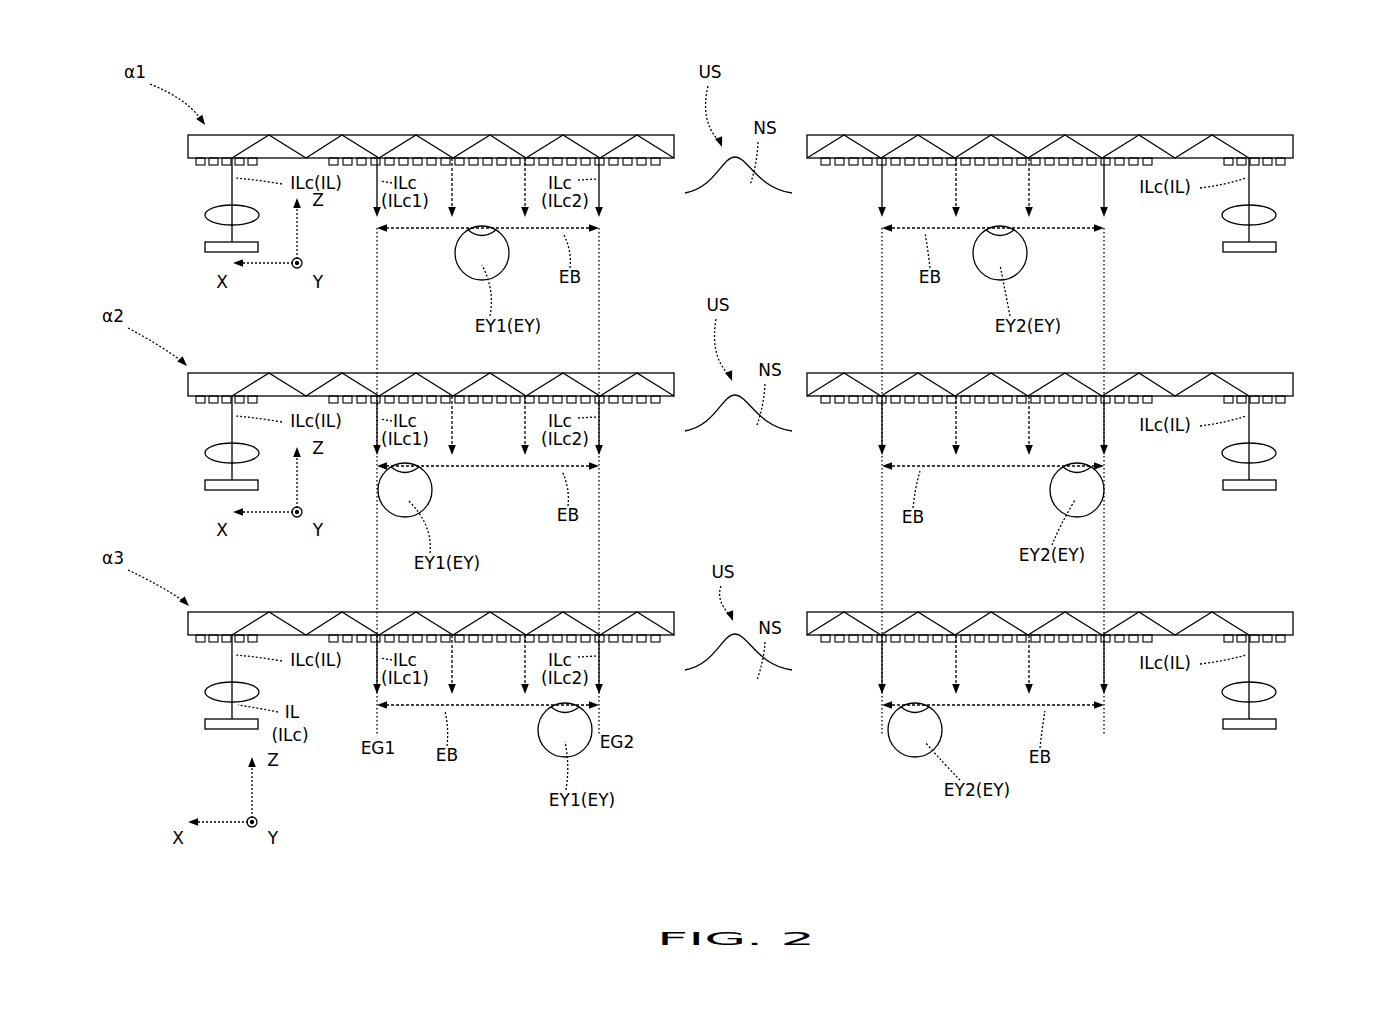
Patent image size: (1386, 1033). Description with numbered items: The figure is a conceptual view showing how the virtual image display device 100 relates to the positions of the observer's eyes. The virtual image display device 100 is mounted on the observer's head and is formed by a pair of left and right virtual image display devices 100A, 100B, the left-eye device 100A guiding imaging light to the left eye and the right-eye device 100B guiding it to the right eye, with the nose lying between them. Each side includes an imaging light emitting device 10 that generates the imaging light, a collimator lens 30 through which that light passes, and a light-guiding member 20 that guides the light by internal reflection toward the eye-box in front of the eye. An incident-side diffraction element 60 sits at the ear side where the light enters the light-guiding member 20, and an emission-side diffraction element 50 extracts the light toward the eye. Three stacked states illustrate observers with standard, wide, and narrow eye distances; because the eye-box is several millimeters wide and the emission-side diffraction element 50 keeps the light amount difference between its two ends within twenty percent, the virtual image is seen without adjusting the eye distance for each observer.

The imaging light emitting device 10 is at (205, 247).
The light-guiding member 20 is at (441, 132).
The collimator lens 30 is at (220, 214).
The emission-side diffraction element 50 is at (646, 175).
The incident-side diffraction element 60 is at (180, 163).
The virtual image display device 100 is at (293, 96).
The virtual image display device for the left eye 100A is at (533, 110).
The virtual image display device for the right eye 100B is at (838, 110).